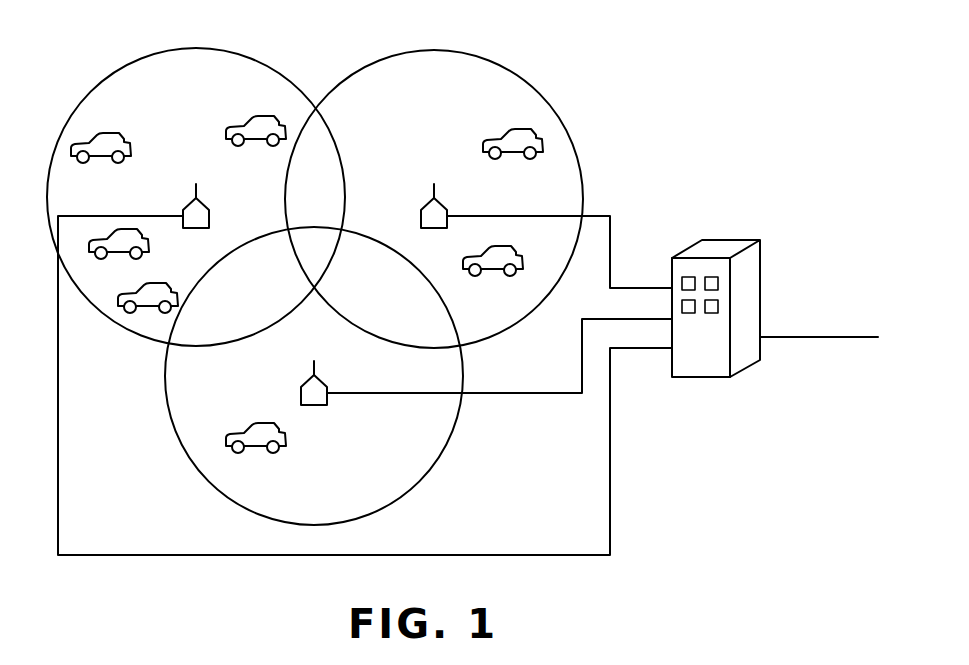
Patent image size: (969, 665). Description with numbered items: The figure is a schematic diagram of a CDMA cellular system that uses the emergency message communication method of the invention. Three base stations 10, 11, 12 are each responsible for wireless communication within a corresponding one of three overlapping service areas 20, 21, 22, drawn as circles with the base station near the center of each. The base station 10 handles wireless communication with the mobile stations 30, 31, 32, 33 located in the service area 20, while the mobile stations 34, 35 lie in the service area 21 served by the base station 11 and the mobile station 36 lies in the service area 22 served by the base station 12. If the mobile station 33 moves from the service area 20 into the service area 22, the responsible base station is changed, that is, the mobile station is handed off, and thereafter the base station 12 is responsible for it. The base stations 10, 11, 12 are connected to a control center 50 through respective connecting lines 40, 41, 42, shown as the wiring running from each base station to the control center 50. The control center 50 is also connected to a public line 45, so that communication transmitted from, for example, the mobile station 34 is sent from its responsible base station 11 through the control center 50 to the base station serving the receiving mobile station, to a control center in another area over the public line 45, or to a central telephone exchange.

The base station 10 is at (210, 212).
The base station 11 is at (421, 220).
The base station 12 is at (301, 390).
The service area 20 is at (232, 47).
The service area 21 is at (498, 51).
The service area 22 is at (412, 485).
The mobile station 30 is at (248, 122).
The mobile station 31 is at (126, 141).
The mobile station 32 is at (151, 246).
The mobile station 33 is at (140, 292).
The mobile station 34 is at (500, 140).
The mobile station 35 is at (488, 278).
The mobile station 36 is at (260, 452).
The connecting line 40 is at (543, 556).
The connecting line 41 is at (608, 217).
The connecting line 42 is at (552, 395).
The public line 45 is at (839, 335).
The control center 50 is at (720, 378).